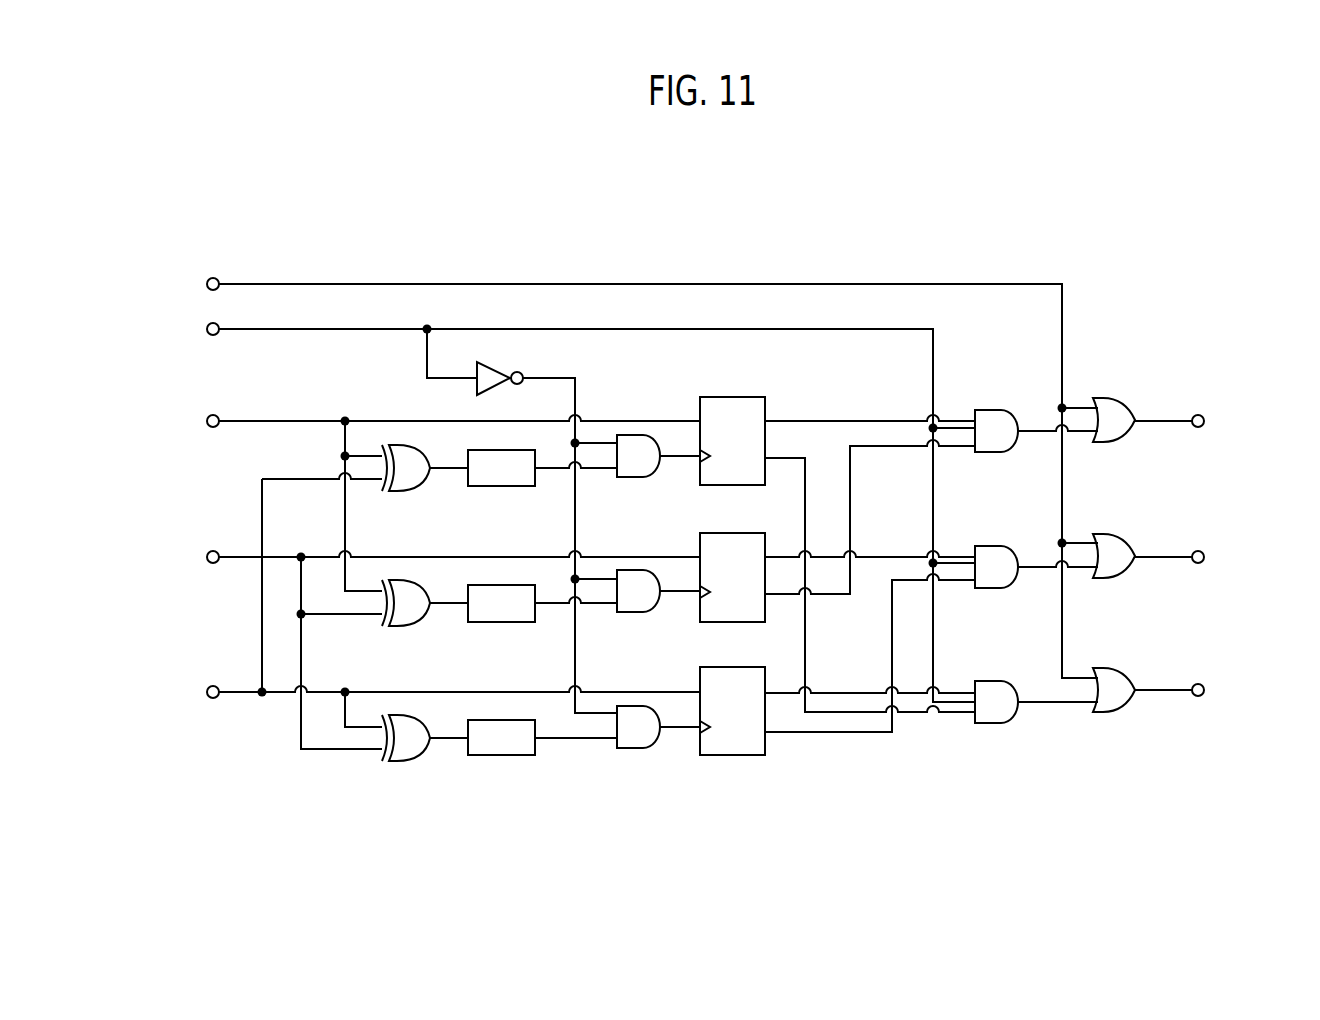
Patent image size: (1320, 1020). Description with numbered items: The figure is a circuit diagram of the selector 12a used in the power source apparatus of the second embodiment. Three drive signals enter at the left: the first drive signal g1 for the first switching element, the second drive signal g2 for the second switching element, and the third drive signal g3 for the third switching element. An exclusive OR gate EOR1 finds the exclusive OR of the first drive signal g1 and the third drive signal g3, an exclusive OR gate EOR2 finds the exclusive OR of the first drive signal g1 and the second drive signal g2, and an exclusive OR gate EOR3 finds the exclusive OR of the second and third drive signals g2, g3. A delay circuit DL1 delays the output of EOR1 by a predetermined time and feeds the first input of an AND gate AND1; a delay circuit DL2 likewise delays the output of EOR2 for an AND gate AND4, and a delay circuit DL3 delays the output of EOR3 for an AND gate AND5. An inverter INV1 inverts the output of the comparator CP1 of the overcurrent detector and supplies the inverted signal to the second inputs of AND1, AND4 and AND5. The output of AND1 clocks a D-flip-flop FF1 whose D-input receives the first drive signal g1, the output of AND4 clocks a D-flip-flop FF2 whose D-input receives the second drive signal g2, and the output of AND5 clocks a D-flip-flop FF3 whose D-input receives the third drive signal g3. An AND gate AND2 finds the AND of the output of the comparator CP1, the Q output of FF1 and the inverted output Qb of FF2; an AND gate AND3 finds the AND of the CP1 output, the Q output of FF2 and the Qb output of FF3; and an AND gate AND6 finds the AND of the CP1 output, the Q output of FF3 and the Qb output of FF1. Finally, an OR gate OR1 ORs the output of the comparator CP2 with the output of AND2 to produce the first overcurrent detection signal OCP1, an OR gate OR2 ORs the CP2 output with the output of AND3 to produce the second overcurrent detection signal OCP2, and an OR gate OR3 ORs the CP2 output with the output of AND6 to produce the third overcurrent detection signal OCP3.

The selector 12a is at (817, 247).
The comparator CP1 is at (187, 326).
The comparator CP2 is at (187, 283).
The first drive signal g1 is at (196, 418).
The second drive signal g2 is at (196, 555).
The third drive signal g3 is at (196, 690).
The inverter INV1 is at (505, 363).
The exclusive OR gate EOR1 is at (404, 487).
The exclusive OR gate EOR2 is at (404, 621).
The exclusive OR gate EOR3 is at (404, 756).
The delay circuit DL1 is at (501, 468).
The delay circuit DL2 is at (501, 603).
The delay circuit DL3 is at (501, 737).
The AND gate AND1 is at (637, 474).
The AND gate AND2 is at (996, 413).
The AND gate AND3 is at (996, 550).
The AND gate AND4 is at (637, 609).
The AND gate AND5 is at (637, 744).
The AND gate AND6 is at (996, 685).
The D-flip-flop FF1 is at (733, 425).
The D-flip-flop FF2 is at (733, 561).
The D-flip-flop FF3 is at (733, 695).
The OR gate OR1 is at (1111, 404).
The OR gate OR2 is at (1111, 540).
The OR gate OR3 is at (1111, 673).
The first overcurrent detection signal OCP1 is at (1232, 418).
The second overcurrent detection signal OCP2 is at (1232, 555).
The third overcurrent detection signal OCP3 is at (1232, 689).